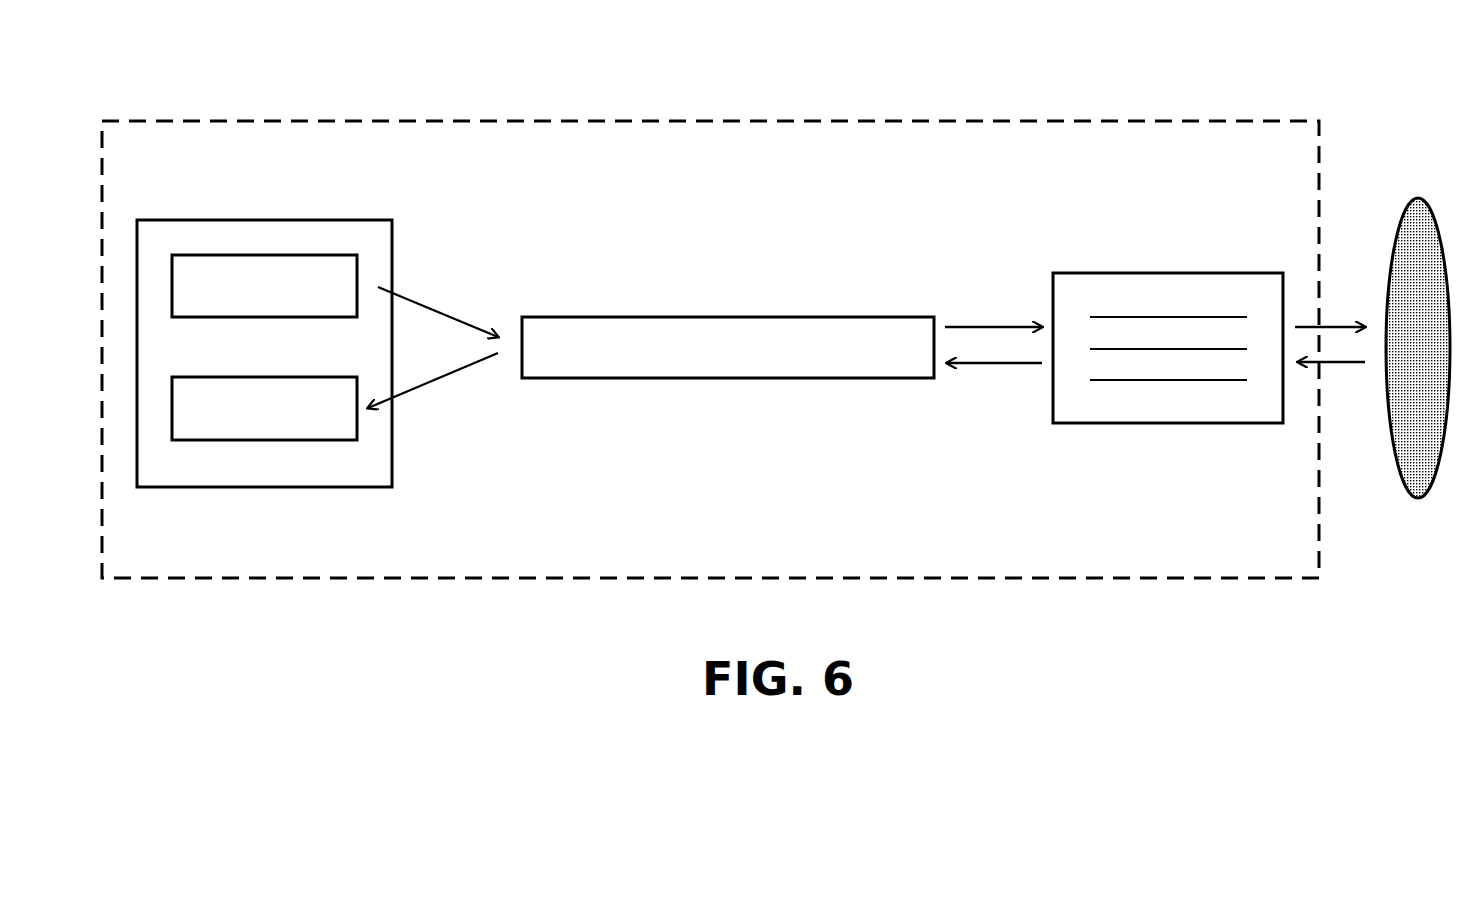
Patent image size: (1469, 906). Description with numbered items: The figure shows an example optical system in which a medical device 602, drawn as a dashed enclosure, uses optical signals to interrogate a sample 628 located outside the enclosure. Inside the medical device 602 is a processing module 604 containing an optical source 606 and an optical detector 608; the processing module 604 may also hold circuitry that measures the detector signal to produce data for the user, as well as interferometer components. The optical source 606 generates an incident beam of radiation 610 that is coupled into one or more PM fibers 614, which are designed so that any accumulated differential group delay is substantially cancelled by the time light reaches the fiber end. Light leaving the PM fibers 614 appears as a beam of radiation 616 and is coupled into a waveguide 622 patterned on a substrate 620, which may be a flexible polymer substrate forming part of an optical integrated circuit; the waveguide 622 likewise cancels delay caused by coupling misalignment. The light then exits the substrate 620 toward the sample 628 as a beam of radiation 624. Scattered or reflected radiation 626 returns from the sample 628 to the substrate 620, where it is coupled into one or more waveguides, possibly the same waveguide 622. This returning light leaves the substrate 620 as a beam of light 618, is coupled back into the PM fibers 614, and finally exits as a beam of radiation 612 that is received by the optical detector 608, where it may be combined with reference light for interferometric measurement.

The medical device 602 is at (163, 118).
The processing module 604 is at (348, 220).
The optical source 606 is at (192, 257).
The optical detector 608 is at (278, 442).
The incident beam of radiation 610 is at (443, 310).
The beam of radiation 612 is at (460, 368).
The PM fibers 614 is at (715, 316).
The beam of radiation 616 is at (973, 326).
The beam of light 618 is at (987, 365).
The substrate 620 is at (1175, 273).
The waveguide 622 is at (1098, 316).
The beam of radiation 624 is at (1330, 326).
The scattered or reflected radiation 626 is at (1358, 364).
The sample 628 is at (1415, 197).